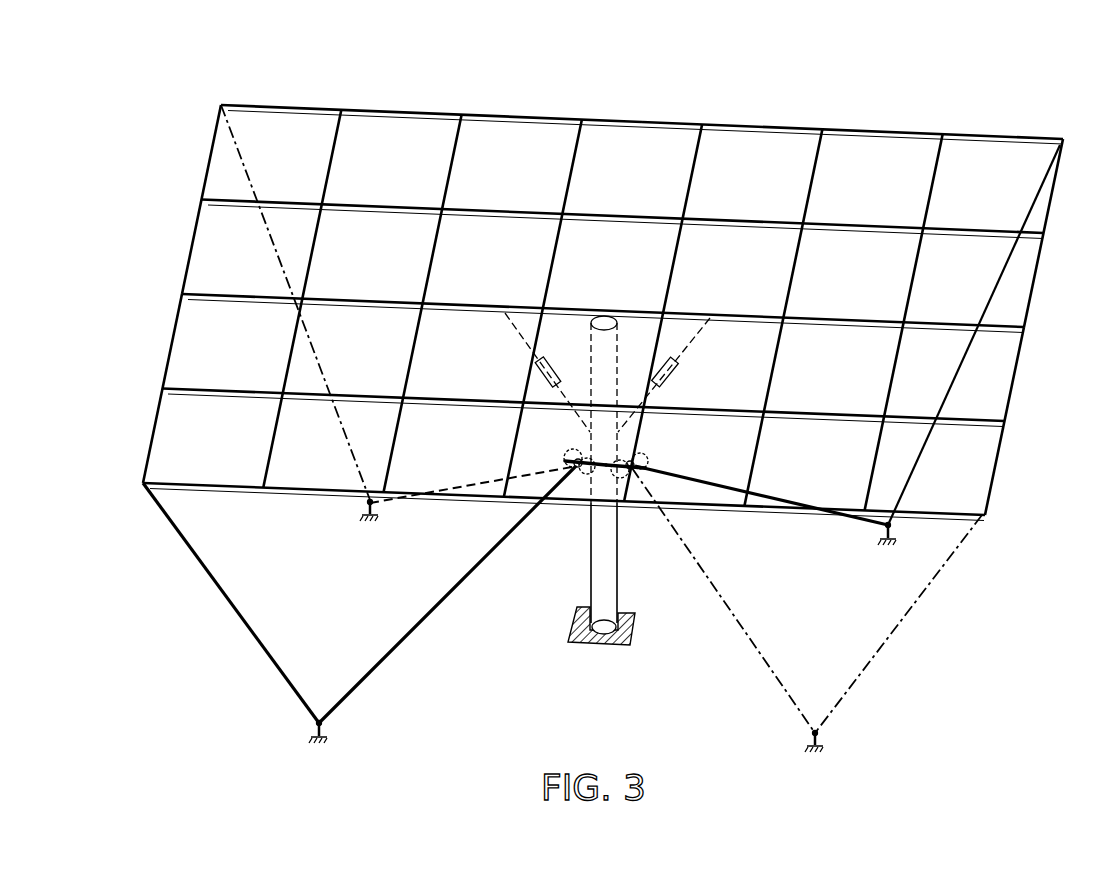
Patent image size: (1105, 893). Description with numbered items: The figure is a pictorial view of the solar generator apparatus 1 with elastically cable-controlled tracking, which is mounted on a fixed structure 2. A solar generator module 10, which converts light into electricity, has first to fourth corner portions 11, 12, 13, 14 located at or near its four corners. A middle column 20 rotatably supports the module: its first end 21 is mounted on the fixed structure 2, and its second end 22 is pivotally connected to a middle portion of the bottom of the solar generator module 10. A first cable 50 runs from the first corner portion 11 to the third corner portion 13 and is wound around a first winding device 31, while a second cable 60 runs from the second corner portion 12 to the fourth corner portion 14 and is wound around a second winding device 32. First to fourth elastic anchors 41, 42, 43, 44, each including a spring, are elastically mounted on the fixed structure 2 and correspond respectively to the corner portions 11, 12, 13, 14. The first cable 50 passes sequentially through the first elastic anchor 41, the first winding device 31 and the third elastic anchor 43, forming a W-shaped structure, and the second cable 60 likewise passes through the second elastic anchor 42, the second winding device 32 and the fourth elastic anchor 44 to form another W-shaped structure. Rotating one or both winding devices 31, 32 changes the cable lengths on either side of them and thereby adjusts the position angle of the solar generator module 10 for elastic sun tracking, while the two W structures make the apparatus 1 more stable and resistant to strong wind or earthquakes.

The solar generator apparatus 1 is at (588, 310).
The fixed structure 2 is at (584, 650).
The solar generator module 10 is at (588, 310).
The first corner portion 11 is at (1050, 152).
The second corner portion 12 is at (983, 516).
The third corner portion 13 is at (141, 486).
The fourth corner portion 14 is at (235, 117).
The middle column 20 is at (600, 573).
The first end 21 is at (593, 638).
The second end 22 is at (590, 330).
The first winding device 31 is at (565, 460).
The second winding device 32 is at (650, 456).
The first elastic anchor 41 is at (888, 545).
The second elastic anchor 42 is at (822, 736).
The third elastic anchor 43 is at (318, 716).
The fourth elastic anchor 44 is at (370, 522).
The first cable 50 is at (435, 615).
The second cable 60 is at (737, 623).